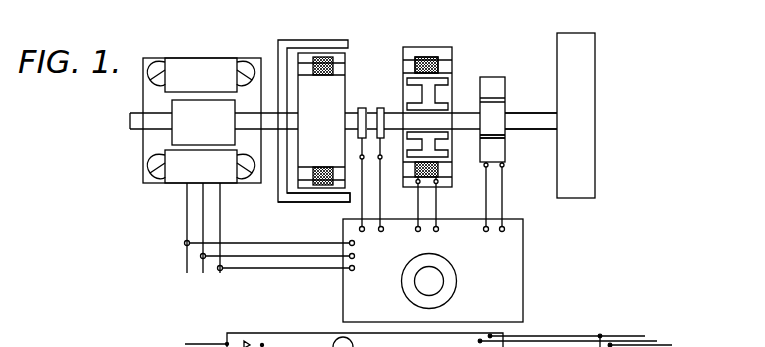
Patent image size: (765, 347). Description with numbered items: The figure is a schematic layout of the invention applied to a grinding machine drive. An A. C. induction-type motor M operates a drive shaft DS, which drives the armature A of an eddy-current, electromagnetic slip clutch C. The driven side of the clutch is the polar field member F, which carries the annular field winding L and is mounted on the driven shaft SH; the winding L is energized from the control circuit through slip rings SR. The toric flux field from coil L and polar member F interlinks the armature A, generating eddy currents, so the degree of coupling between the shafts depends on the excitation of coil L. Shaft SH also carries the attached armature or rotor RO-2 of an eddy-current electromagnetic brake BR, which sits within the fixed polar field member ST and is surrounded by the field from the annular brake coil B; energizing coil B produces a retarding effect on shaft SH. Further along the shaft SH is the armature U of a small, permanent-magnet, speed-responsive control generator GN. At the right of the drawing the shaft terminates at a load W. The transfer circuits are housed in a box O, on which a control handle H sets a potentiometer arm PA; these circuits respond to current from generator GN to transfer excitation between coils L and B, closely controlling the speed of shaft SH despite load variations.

The A. C. motor M is at (186, 63).
The drive shaft DS is at (130, 122).
The slip clutch C is at (295, 31).
The field member F is at (340, 60).
The field winding L is at (325, 76).
The slip rings SR is at (379, 107).
The field member ST is at (405, 57).
The brake BR is at (428, 50).
The field winding B is at (433, 58).
The armature RO-2 is at (440, 94).
The control generator GN is at (516, 74).
The drive shaft SH is at (526, 118).
The armature U is at (493, 124).
The wheel W is at (588, 109).
The armature A is at (291, 200).
The box O is at (531, 259).
The potentiometer arm PA is at (418, 284).
The control handle H is at (444, 281).